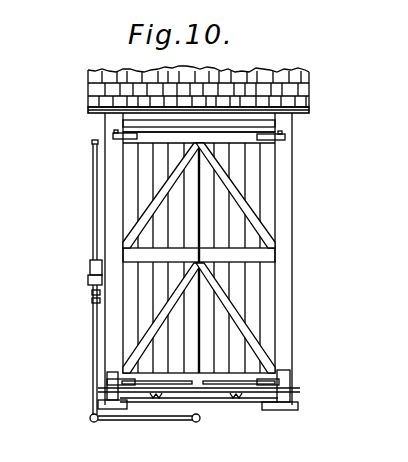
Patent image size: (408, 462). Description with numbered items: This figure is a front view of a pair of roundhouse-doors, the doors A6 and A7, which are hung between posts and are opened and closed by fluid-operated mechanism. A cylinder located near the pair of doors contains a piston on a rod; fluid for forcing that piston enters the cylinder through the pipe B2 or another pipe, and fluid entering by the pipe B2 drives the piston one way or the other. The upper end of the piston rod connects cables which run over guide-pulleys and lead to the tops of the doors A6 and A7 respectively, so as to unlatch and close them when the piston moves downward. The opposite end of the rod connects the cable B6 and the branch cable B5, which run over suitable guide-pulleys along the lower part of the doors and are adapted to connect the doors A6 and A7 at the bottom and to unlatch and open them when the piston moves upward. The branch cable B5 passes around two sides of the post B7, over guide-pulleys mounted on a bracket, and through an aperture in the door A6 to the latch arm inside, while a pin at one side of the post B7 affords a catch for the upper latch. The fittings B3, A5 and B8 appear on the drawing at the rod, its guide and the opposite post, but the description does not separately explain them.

The guide bracket on operating rod A5 is at (90, 275).
The door A6 is at (132, 190).
The door A7 is at (268, 167).
The pipe B2 is at (93, 337).
The upper end of operating rod B3 is at (93, 151).
The branch cable B5 is at (183, 388).
The cable B6 is at (250, 388).
The post B7 is at (107, 377).
The right keeper bracket B8 is at (290, 375).